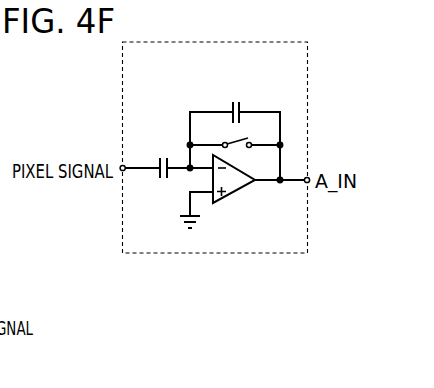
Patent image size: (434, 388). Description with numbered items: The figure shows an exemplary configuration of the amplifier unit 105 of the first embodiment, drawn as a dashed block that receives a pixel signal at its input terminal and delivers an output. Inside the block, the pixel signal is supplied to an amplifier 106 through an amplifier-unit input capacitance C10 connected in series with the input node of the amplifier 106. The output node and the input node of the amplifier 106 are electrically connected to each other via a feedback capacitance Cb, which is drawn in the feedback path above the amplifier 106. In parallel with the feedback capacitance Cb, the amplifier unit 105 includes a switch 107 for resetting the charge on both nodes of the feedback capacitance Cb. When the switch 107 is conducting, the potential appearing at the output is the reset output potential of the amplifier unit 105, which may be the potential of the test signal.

The amplifier unit 105 is at (214, 255).
The amplifier 106 is at (235, 195).
The switch 107 is at (237, 137).
The amplifier-unit input capacitance C10 is at (160, 157).
The feedback capacitance Cb is at (236, 101).